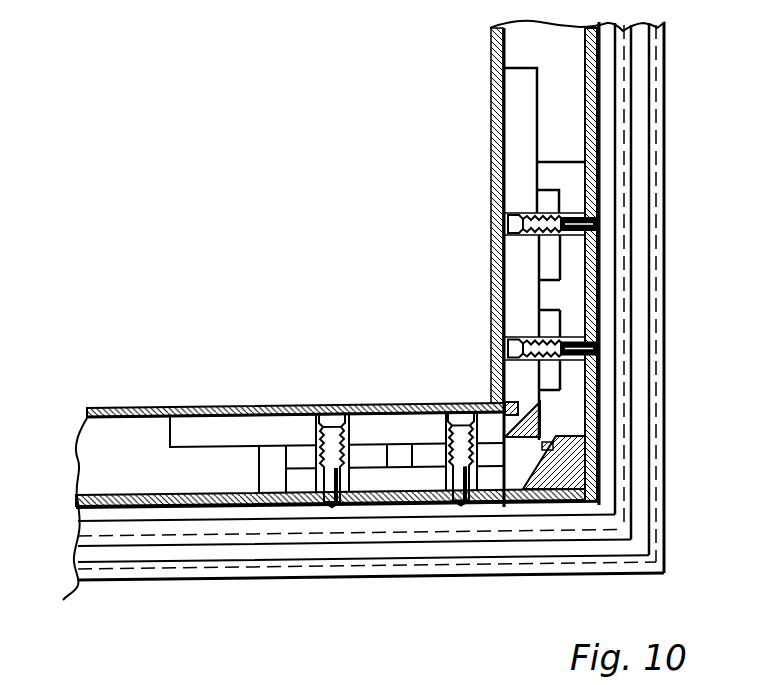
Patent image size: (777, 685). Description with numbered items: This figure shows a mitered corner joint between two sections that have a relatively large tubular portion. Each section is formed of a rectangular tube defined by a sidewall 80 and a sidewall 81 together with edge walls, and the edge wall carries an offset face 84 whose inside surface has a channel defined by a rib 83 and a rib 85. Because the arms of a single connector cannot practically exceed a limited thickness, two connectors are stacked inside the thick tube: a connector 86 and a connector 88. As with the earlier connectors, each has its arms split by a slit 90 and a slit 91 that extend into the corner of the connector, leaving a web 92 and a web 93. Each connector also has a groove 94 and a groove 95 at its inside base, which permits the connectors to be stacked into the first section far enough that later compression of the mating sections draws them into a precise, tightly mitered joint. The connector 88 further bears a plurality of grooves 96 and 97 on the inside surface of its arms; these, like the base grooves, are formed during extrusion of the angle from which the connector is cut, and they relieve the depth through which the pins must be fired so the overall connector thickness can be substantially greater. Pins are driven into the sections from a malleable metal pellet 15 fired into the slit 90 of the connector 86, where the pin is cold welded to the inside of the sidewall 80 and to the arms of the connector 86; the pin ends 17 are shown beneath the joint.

The malleable metal pellet 15 is at (329, 417).
The screw tip 17 is at (333, 510).
The sidewall 80 is at (122, 409).
The sidewall 81 is at (75, 497).
The rib 83 is at (78, 531).
The offset face 84 is at (78, 555).
The rib 85 is at (77, 585).
The connector 86 is at (238, 441).
The connector 88 is at (413, 491).
The slit 90 is at (272, 416).
The slit 91 is at (272, 478).
The web 92 is at (530, 413).
The web 93 is at (602, 468).
The groove 94 is at (510, 406).
The groove 95 is at (552, 441).
The groove 96 is at (366, 470).
The groove 97 is at (426, 466).